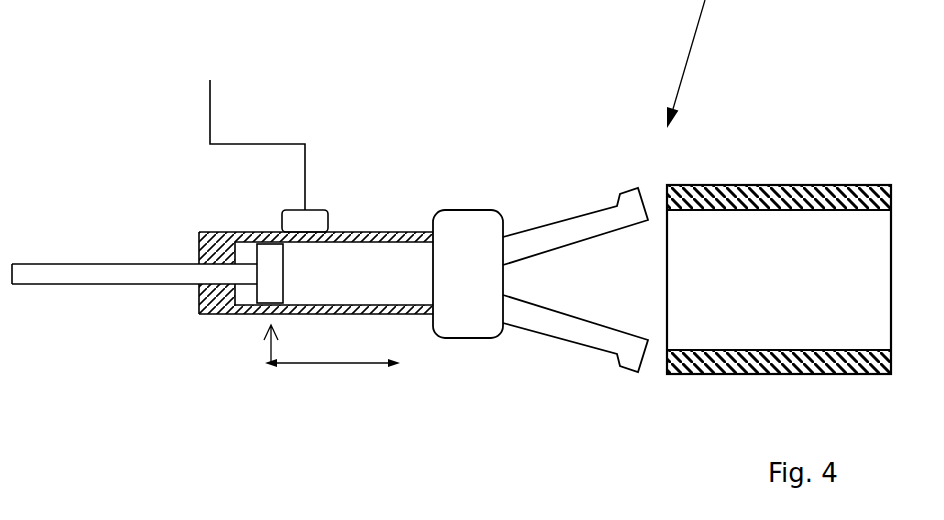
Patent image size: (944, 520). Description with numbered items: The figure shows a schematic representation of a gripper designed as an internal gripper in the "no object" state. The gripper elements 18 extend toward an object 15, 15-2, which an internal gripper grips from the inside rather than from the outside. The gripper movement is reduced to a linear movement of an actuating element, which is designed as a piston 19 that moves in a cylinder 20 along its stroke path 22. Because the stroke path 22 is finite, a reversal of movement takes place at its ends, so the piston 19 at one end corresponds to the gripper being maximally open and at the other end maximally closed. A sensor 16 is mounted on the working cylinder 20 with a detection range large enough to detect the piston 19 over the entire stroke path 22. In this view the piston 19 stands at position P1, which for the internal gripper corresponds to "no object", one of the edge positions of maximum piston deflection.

The object 15 is at (779, 234).
The object 15-2 is at (748, 185).
The sensor 16 is at (282, 216).
The gripper elements 18 is at (566, 206).
The piston 19 is at (245, 280).
The cylinder 20 is at (199, 315).
The stroke path 22 is at (350, 364).
The position P1 is at (271, 365).